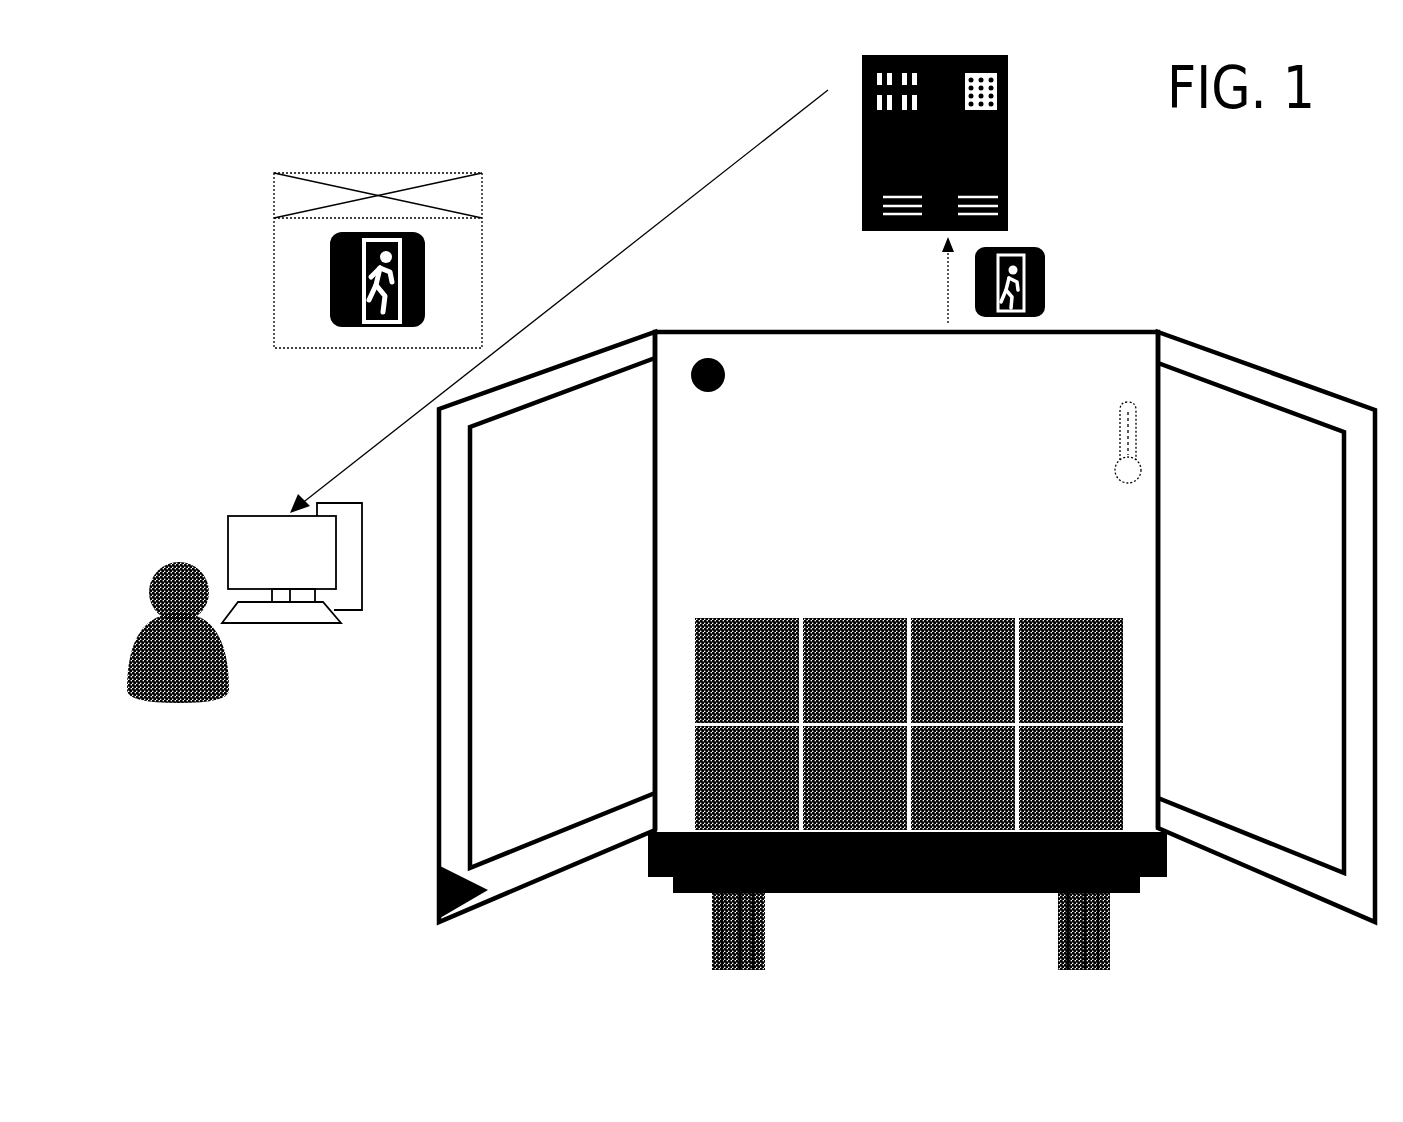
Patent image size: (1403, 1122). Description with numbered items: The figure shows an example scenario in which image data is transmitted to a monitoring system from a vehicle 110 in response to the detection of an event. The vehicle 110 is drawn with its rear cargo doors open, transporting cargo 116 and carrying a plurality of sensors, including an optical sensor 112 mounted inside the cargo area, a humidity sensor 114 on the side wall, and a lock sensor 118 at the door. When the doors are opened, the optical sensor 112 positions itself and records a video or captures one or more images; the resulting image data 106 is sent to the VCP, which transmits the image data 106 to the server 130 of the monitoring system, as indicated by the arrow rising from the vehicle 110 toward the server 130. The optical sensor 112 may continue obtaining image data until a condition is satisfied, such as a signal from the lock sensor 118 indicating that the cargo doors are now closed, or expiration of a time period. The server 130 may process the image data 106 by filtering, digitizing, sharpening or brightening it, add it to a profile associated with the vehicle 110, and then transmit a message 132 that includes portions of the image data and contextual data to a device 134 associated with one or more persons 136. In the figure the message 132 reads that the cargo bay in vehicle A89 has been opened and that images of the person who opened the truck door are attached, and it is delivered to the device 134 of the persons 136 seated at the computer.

The image data 106 is at (1030, 278).
The vehicle 110 is at (907, 621).
The optical sensor 112 is at (743, 375).
The humidity sensor 114 is at (1091, 438).
The cargo 116 is at (909, 709).
The lock sensor 118 is at (431, 889).
The server 130 is at (970, 143).
The message 132 is at (378, 202).
The device 134 is at (321, 562).
The persons 136 is at (204, 632).